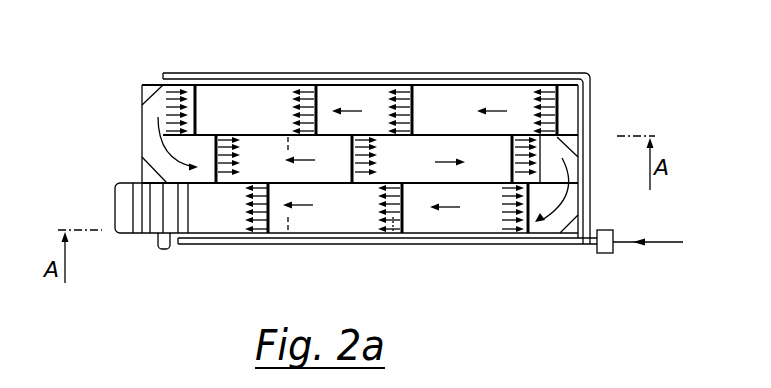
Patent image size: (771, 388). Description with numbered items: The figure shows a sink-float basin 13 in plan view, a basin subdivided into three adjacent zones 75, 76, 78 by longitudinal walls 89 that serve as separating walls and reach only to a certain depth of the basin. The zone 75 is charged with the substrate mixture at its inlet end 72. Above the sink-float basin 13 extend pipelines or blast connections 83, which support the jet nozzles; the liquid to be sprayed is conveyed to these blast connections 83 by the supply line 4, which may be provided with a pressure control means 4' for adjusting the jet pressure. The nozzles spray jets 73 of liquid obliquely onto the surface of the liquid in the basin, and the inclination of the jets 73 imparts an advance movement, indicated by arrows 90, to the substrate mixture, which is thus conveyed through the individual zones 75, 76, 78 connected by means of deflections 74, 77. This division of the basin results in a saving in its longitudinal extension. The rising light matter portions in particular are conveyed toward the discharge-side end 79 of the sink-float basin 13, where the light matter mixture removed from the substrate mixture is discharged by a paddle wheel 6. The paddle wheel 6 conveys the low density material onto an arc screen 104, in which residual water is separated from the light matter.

The supply line 4 is at (412, 162).
The pressure control means 4' is at (611, 267).
The paddle wheel 6 is at (152, 233).
The sink-float basin 13 is at (442, 244).
The inlet end 72 is at (572, 95).
The jets of liquid 73 is at (298, 85).
The deflection 74 is at (147, 122).
The zone 75 is at (362, 100).
The zone 76 is at (330, 170).
The deflection 77 is at (572, 182).
The zone 78 is at (300, 220).
The discharge-side end 79 is at (193, 217).
The blast connections 83 is at (215, 137).
The longitudinal walls 89 is at (478, 137).
The arrows 90 is at (495, 107).
The arc screen 104 is at (127, 223).